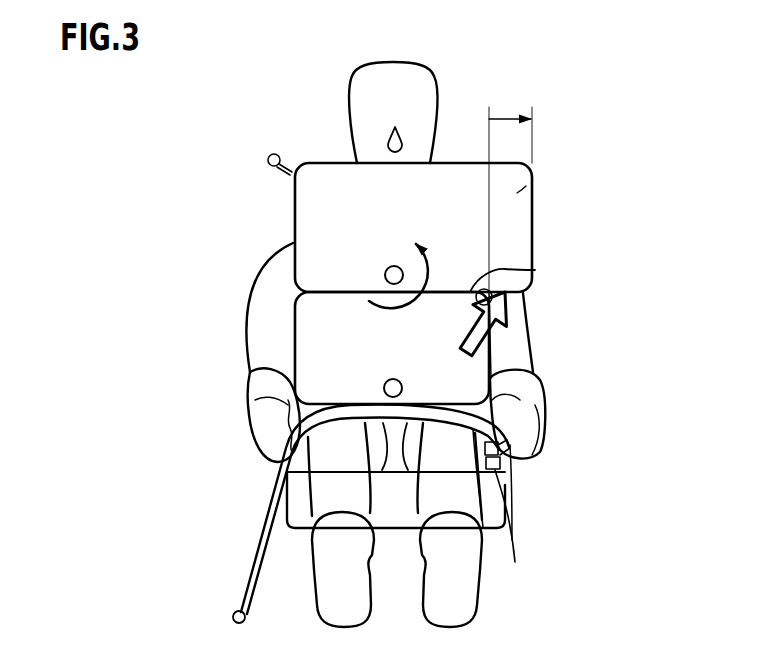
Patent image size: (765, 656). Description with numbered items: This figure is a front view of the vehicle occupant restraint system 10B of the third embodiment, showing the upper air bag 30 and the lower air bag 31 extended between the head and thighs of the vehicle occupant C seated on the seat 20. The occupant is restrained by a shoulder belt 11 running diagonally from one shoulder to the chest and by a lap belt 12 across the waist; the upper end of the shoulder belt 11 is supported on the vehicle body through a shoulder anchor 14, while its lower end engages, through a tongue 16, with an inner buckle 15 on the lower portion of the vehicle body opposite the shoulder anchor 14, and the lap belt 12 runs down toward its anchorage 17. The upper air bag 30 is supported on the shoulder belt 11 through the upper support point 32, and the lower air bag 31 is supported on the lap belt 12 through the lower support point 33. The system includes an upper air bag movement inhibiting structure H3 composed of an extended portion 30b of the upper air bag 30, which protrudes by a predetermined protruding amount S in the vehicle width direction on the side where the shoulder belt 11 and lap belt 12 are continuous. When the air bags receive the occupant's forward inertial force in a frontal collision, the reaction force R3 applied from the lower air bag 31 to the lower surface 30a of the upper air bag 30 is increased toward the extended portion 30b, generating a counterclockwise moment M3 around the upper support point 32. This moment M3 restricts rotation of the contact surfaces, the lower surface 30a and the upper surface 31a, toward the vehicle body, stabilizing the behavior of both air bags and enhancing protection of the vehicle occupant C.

The vehicle occupant restraint system 10B is at (571, 86).
The shoulder belt 11 is at (291, 173).
The lap belt 12 is at (512, 534).
The shoulder anchor 14 is at (268, 160).
The inner buckle 15 is at (516, 456).
The tongue 16 is at (540, 437).
The lap anchor 17 is at (233, 616).
The seat 20 is at (521, 498).
The upper air bag 30 is at (352, 200).
The lower surface 30a is at (493, 296).
The extended portion 30b is at (517, 193).
The lower air bag 31 is at (327, 377).
The upper surface 31a is at (535, 270).
The upper support point 32 is at (385, 272).
The lower support point 33 is at (387, 379).
The vehicle occupant C is at (350, 80).
The protruding amount S is at (506, 110).
The counterclockwise moment M3 is at (427, 268).
The upper air bag movement inhibiting structure H3 is at (545, 247).
The reaction force R3 is at (500, 340).